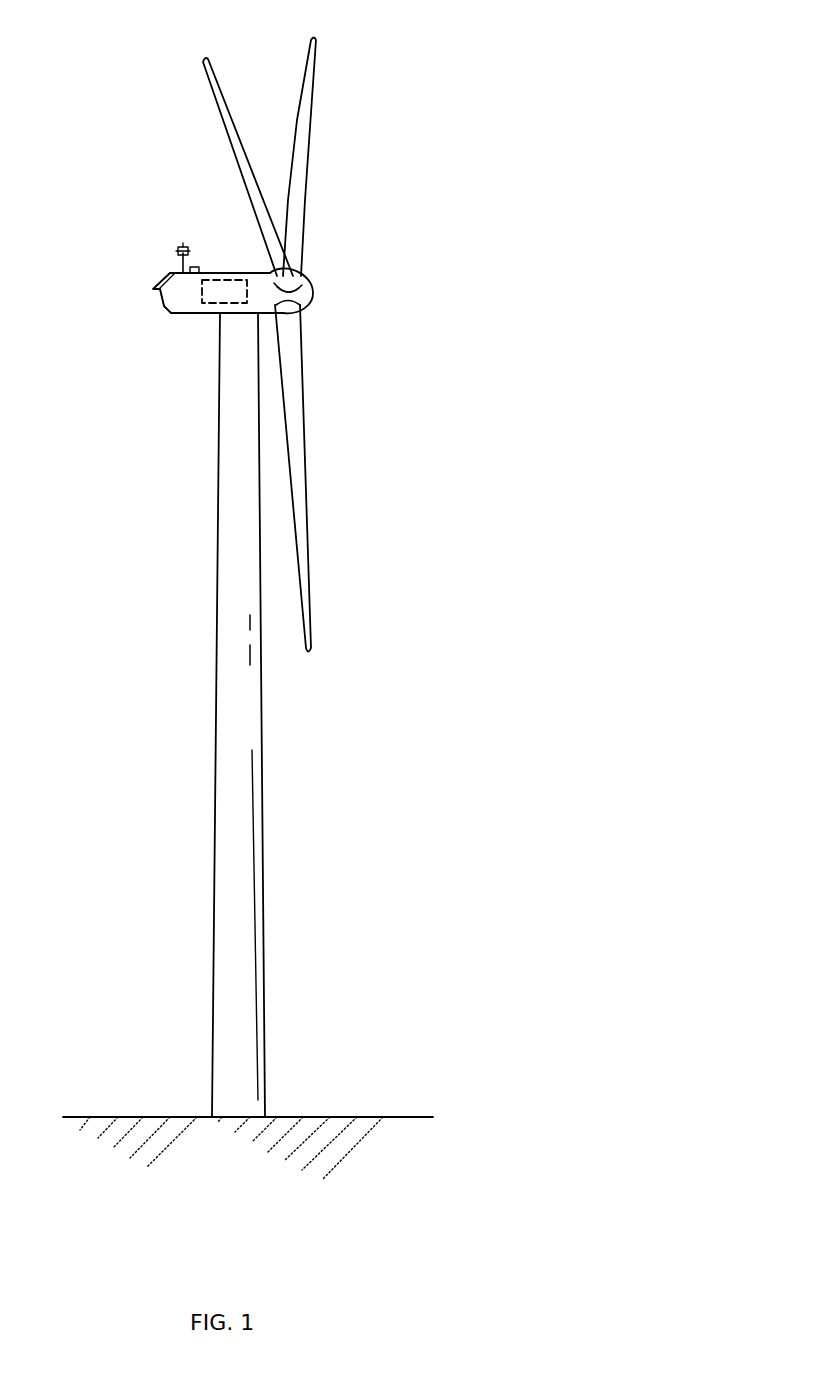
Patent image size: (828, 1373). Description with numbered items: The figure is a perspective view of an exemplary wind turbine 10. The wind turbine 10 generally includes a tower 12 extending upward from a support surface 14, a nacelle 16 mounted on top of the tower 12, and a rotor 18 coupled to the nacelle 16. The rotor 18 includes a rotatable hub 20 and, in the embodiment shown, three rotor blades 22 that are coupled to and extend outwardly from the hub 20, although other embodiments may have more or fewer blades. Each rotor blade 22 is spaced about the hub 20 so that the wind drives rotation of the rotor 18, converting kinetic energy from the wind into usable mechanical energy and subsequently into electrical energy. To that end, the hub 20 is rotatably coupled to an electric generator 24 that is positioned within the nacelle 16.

The wind turbine 10 is at (597, 105).
The tower 12 is at (228, 828).
The support surface 14 is at (145, 1117).
The nacelle 16 is at (195, 317).
The rotor 18 is at (316, 270).
The rotatable hub 20 is at (310, 288).
The rotor blade 22 is at (306, 75).
The electric generator 24 is at (220, 280).